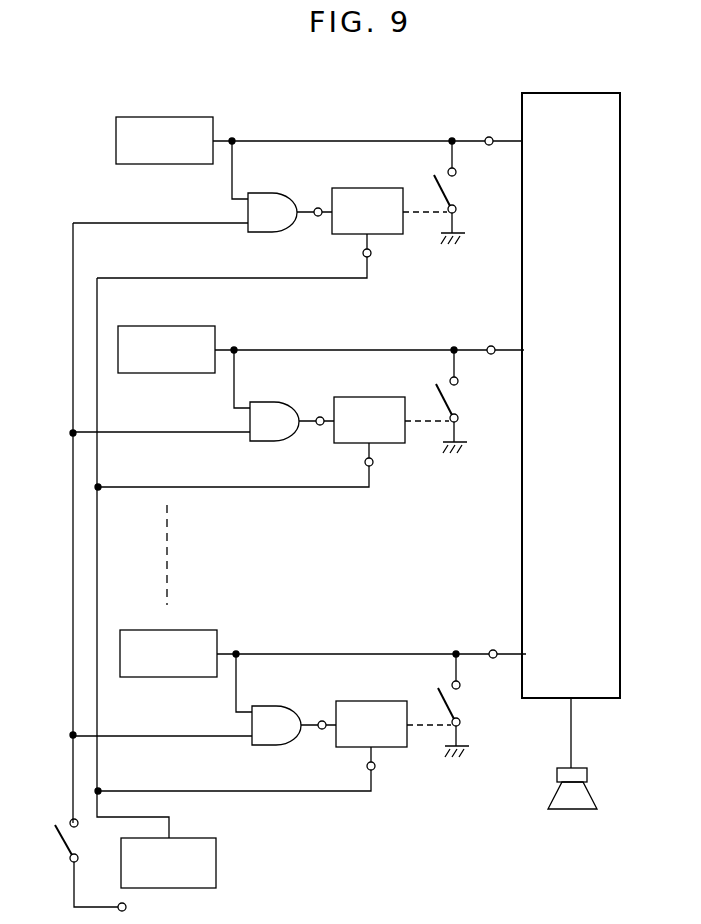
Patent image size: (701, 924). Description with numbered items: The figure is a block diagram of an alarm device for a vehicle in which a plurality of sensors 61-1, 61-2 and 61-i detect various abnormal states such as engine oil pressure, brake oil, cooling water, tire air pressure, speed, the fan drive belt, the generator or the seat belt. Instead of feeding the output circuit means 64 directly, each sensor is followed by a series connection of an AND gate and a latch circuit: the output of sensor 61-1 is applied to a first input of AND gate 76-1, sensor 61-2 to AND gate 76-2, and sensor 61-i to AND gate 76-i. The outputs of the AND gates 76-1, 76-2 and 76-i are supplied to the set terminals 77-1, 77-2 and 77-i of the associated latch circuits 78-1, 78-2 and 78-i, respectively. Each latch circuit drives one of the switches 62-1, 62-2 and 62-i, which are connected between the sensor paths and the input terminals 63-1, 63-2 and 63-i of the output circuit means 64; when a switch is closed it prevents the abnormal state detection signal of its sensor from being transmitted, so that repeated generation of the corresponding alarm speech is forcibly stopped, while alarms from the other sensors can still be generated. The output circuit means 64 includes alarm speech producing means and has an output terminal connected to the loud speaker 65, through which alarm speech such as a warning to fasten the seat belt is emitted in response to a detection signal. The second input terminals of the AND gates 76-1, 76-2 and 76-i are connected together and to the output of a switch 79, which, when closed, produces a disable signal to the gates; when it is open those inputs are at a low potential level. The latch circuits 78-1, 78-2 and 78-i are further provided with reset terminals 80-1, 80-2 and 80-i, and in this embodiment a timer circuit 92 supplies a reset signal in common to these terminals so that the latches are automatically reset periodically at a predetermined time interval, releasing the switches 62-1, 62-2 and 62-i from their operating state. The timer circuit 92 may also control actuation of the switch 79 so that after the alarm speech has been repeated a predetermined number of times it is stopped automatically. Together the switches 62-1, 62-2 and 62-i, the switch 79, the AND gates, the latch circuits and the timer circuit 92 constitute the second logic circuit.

The sensor 61-1 is at (175, 117).
The sensor 61-2 is at (166, 330).
The sensor 61-i is at (174, 633).
The switch 62-1 is at (472, 193).
The switch 62-2 is at (474, 403).
The switch 62-i is at (472, 707).
The input terminal 63-1 is at (489, 137).
The input terminal 63-2 is at (479, 332).
The input terminal 63-i is at (477, 635).
The output circuit means 64 is at (570, 93).
The loud speaker 65 is at (571, 812).
The AND gate 76-1 is at (288, 193).
The AND gate 76-2 is at (269, 404).
The AND gate 76-i is at (271, 707).
The set terminal 77-1 is at (316, 217).
The set terminal 77-2 is at (301, 443).
The set terminal 77-i is at (293, 746).
The latch circuit 78-1 is at (378, 188).
The latch circuit 78-2 is at (366, 404).
The latch circuit 78-i is at (371, 705).
The switch 79 is at (58, 850).
The reset terminal 80-1 is at (370, 257).
The reset terminal 80-2 is at (265, 465).
The reset terminal 80-i is at (262, 771).
The timer circuit 92 is at (216, 870).